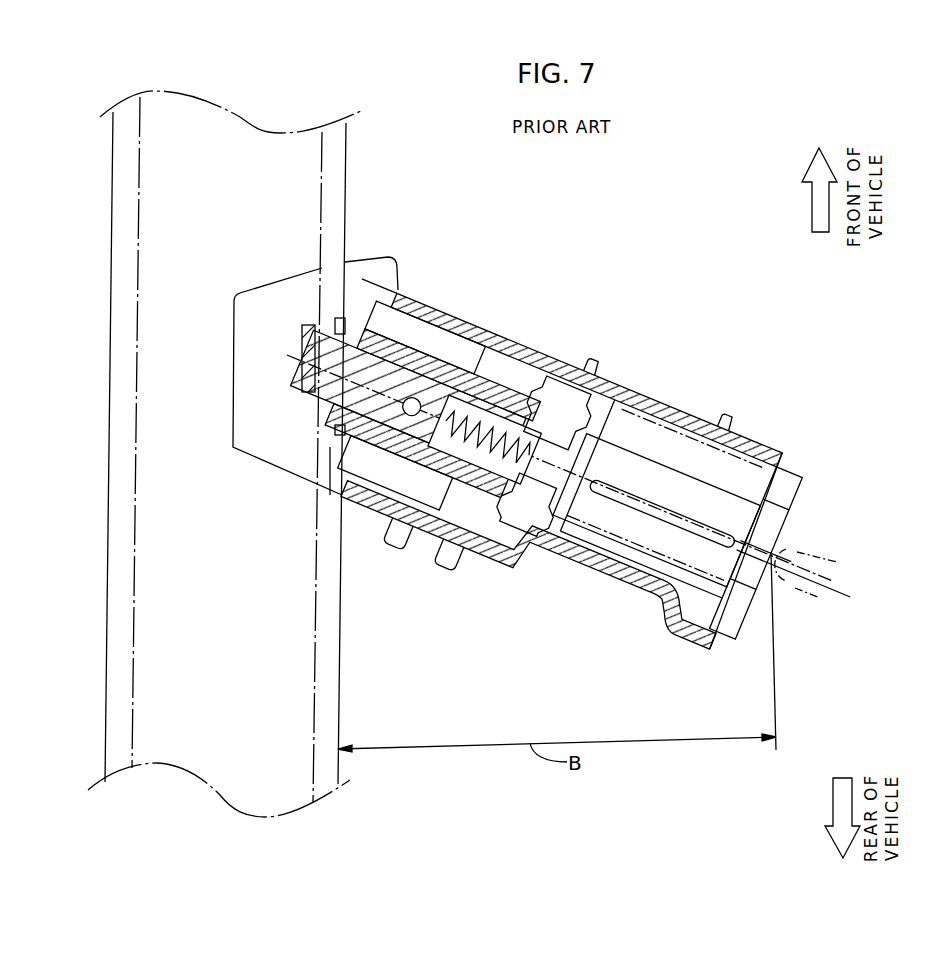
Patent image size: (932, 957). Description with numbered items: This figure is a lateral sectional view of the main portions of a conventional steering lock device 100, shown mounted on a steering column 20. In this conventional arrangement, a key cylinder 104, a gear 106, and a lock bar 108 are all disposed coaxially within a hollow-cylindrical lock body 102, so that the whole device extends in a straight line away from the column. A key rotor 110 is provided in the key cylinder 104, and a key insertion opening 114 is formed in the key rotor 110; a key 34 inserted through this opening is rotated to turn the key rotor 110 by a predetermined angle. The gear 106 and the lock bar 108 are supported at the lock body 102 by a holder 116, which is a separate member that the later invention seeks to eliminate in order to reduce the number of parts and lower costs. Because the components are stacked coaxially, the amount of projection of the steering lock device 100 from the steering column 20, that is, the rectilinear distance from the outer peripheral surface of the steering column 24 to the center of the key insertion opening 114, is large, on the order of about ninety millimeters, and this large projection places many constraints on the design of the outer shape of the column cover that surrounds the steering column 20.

The steering lock device 100 is at (700, 205).
The steering column 20 is at (350, 240).
The steering column 24 is at (348, 162).
The key 34 is at (797, 587).
The lock body 102 is at (648, 394).
The key cylinder 104 is at (792, 470).
The gear 106 is at (545, 400).
The lock bar 108 is at (423, 392).
The key rotor 110 is at (777, 508).
The key insertion opening 114 is at (770, 553).
The holder 116 is at (420, 455).